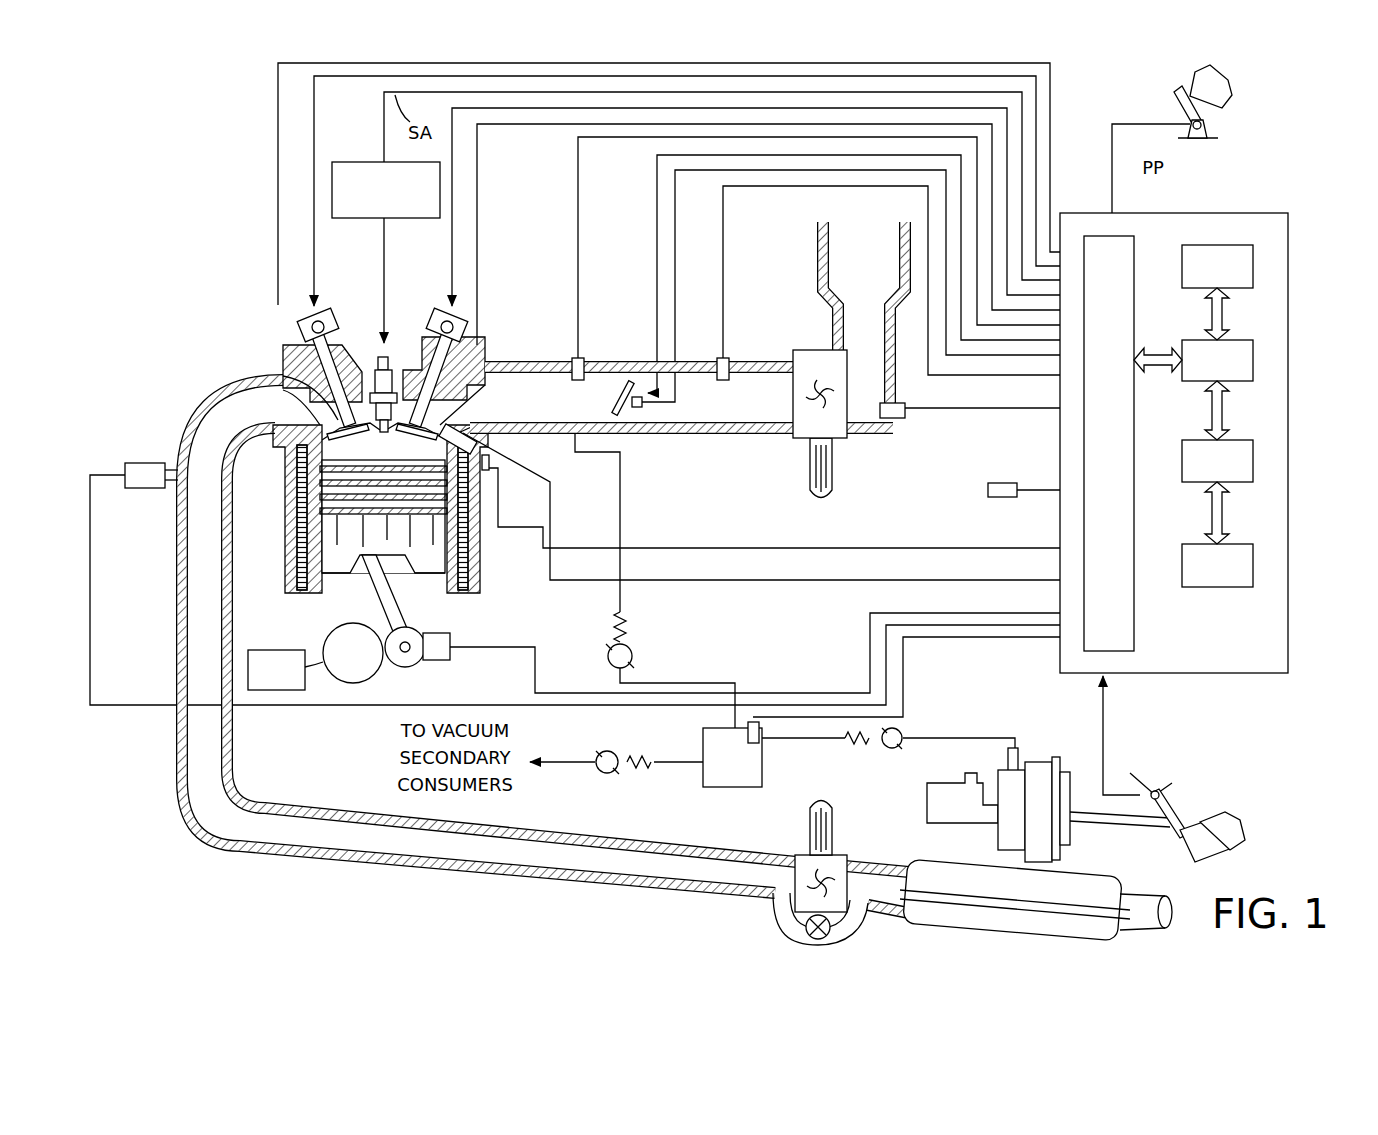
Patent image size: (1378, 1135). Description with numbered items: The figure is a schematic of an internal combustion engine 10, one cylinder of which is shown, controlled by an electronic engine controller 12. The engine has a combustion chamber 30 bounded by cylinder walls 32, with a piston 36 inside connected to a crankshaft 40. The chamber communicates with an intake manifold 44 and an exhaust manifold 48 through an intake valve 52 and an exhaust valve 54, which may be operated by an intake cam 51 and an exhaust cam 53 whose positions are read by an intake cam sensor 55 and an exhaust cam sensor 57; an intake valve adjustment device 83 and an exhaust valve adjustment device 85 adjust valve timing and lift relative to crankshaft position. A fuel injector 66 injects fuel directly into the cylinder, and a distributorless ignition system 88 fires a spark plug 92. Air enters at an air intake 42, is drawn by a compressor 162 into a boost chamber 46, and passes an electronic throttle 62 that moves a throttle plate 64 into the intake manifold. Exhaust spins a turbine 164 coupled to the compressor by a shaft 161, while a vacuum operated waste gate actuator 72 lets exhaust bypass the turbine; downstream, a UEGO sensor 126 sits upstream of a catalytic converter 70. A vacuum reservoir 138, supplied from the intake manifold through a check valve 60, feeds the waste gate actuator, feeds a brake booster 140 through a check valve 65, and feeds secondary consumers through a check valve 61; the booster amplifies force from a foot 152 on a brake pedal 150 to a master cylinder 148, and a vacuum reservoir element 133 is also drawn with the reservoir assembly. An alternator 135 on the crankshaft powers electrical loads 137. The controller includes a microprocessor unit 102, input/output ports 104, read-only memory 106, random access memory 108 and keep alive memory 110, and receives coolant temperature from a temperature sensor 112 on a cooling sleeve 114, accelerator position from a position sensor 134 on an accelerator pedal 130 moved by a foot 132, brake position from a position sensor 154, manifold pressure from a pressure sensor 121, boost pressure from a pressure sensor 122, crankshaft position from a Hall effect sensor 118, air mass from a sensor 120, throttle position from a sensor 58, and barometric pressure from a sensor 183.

The internal combustion engine 10 is at (215, 296).
The electronic engine controller 12 is at (1213, 428).
The combustion chamber 30 is at (382, 443).
The cylinder walls 32 is at (324, 588).
The piston 36 is at (365, 548).
The crankshaft 40 is at (411, 667).
The air intake 42 is at (851, 273).
The intake manifold 44 is at (521, 413).
The intake boost chamber 46 is at (705, 413).
The exhaust manifold 48 is at (238, 416).
The intake cam 51 is at (440, 305).
The intake valve 52 is at (425, 405).
The exhaust cam 53 is at (322, 305).
The exhaust valve 54 is at (300, 385).
The intake cam sensor 55 is at (460, 330).
The exhaust cam sensor 57 is at (300, 330).
The throttle position sensor 58 is at (632, 412).
The check valve 60 is at (630, 650).
The check valve 61 is at (615, 775).
The electronic throttle 62 is at (618, 380).
The throttle plate 64 is at (628, 390).
The check valve 65 is at (888, 750).
The fuel injector 66 is at (478, 448).
The catalytic converter 70 is at (905, 925).
The waste gate actuator 72 is at (806, 930).
The intake valve adjustment device 83 is at (462, 330).
The exhaust valve adjustment device 85 is at (305, 305).
The distributorless ignition system 88 is at (340, 162).
The spark plug 92 is at (396, 360).
The microprocessor unit 102 is at (1253, 355).
The input/output ports 104 is at (1136, 240).
The read-only memory 106 is at (1253, 265).
The random access memory 108 is at (1253, 458).
The keep alive memory 110 is at (1253, 562).
The temperature sensor 112 is at (487, 472).
The cooling sleeve 114 is at (470, 565).
The Hall effect sensor 118 is at (435, 662).
The air mass sensor 120 is at (900, 418).
The pressure sensor 121 is at (570, 356).
The pressure sensor 122 is at (727, 357).
The UEGO sensor 126 is at (125, 465).
The accelerator pedal 130 is at (1176, 100).
The foot 132 is at (1228, 90).
The vacuum reservoir 133 is at (748, 745).
The position sensor 134 is at (1205, 130).
The alternator 135 is at (337, 664).
The electrical loads 137 is at (285, 670).
The vacuum reservoir 138 is at (702, 735).
The brake booster 140 is at (1042, 762).
The master cylinder 148 is at (927, 790).
The brake pedal 150 is at (1182, 845).
The foot 152 is at (1215, 818).
The position sensor 154 is at (1140, 790).
The shaft 161 is at (810, 465).
The compressor 162 is at (818, 350).
The turbine 164 is at (800, 855).
The barometric pressure sensor 183 is at (1002, 483).